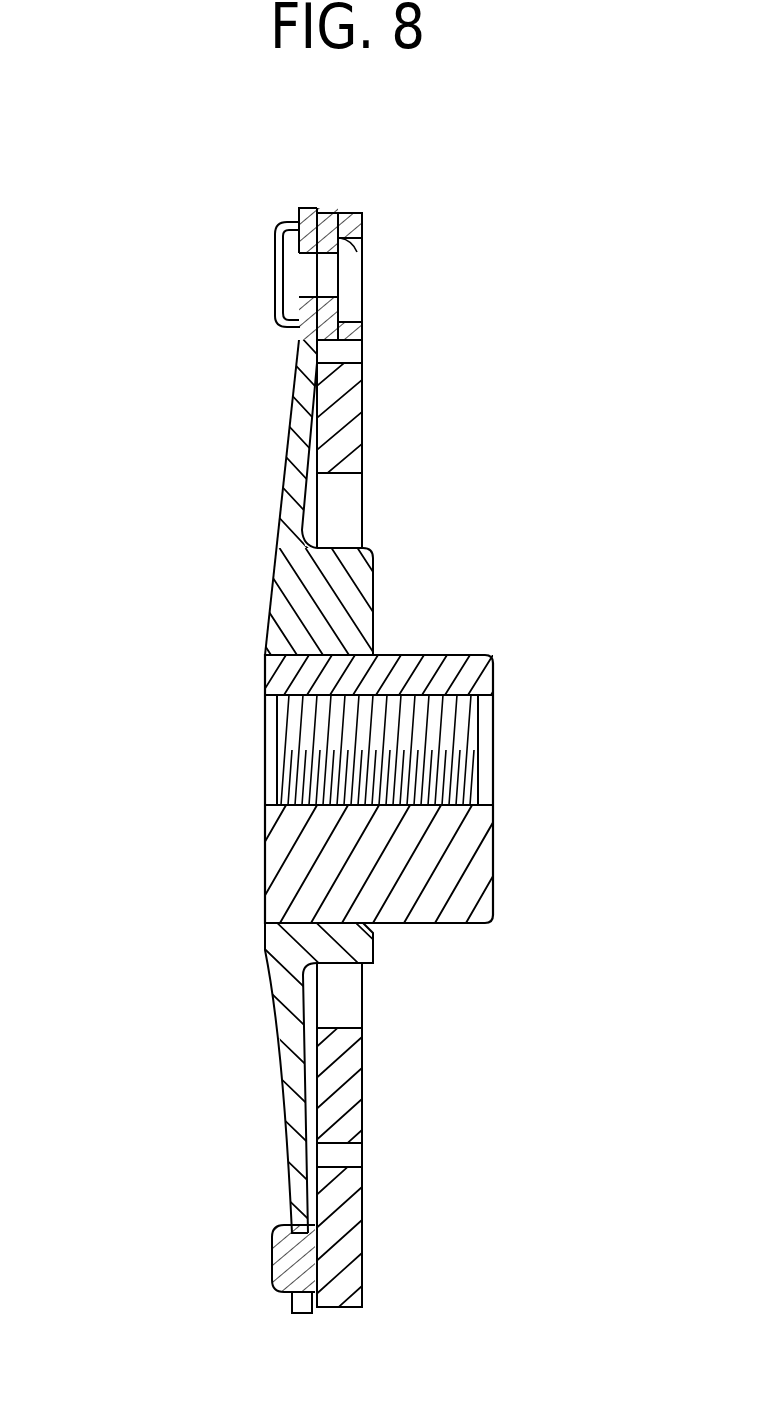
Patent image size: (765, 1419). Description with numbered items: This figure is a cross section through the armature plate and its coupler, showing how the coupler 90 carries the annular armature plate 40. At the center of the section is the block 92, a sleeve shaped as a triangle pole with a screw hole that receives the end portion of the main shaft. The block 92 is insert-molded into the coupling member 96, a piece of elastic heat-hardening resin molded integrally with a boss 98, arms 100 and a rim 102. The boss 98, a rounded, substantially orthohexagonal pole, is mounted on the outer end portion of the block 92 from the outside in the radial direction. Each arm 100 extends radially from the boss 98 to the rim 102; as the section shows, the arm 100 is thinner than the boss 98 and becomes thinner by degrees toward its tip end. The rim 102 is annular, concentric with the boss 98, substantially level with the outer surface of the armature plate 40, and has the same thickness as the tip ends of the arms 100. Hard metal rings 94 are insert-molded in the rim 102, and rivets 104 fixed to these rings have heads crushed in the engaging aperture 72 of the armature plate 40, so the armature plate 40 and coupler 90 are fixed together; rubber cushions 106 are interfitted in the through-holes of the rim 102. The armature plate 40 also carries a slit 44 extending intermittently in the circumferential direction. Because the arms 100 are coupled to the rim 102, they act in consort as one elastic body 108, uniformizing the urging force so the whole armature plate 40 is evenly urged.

The coupler 90 is at (163, 558).
The block 92 is at (467, 868).
The hard metal rings 94 is at (283, 237).
The coupling member 96 is at (265, 610).
The boss 98 is at (355, 598).
The arms 100 is at (277, 515).
The rim 102 is at (307, 212).
The rivets 104 is at (285, 288).
The rubber cushions 106 is at (288, 1253).
The elastic body 108 is at (283, 442).
The armature plate 40 is at (342, 213).
The slit 44 is at (342, 1158).
The engaging aperture 72 is at (367, 260).